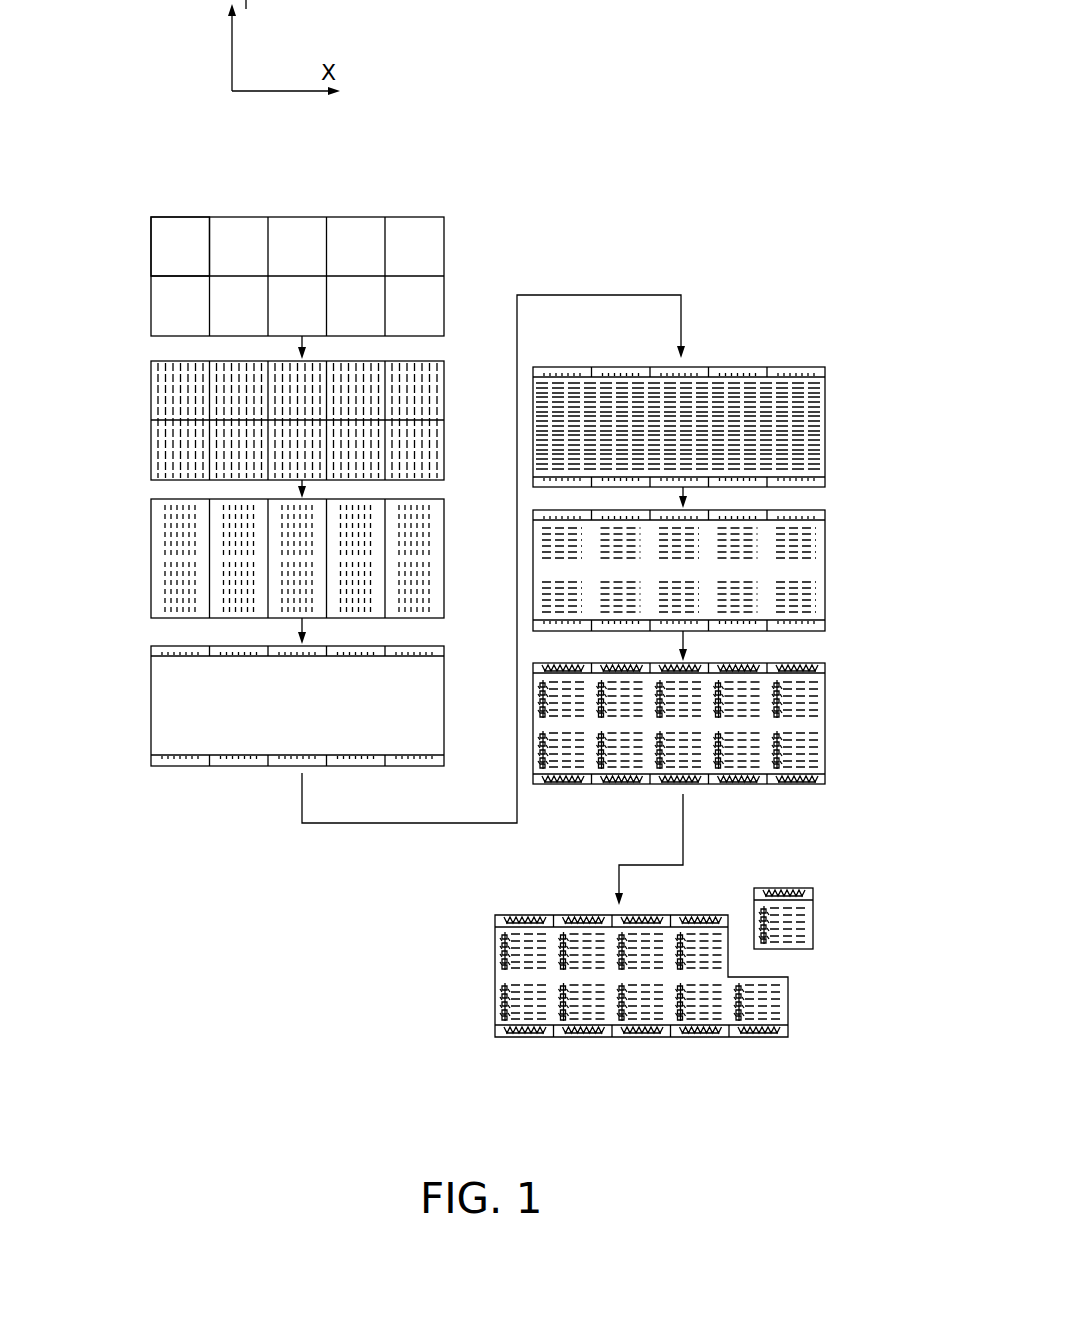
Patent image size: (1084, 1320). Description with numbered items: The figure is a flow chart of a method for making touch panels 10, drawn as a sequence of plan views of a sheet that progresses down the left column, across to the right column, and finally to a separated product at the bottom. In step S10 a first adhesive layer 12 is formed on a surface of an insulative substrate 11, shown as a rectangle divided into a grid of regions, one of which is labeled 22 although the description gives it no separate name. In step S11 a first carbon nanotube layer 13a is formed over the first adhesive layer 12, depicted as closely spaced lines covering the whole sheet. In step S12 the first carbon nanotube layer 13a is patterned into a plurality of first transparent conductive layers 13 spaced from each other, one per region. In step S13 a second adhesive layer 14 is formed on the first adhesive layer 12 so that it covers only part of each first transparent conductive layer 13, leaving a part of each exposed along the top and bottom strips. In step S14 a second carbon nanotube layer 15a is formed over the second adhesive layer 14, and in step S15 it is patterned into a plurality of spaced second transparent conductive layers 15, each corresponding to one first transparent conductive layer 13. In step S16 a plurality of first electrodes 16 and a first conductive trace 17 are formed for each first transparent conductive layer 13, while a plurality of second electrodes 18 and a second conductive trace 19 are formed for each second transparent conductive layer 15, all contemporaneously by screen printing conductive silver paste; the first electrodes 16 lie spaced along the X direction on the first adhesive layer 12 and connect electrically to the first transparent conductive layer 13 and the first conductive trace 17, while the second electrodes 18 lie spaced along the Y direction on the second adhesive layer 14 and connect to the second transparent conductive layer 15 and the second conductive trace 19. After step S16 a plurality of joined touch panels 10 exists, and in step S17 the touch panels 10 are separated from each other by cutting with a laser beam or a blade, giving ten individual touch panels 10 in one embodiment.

The touch panel 10 is at (846, 770).
The insulative substrate 11 is at (447, 240).
The first adhesive layer 12 is at (356, 230).
The first transparent conductive layer 13 is at (428, 540).
The first carbon nanotube layer 13a is at (433, 367).
The second adhesive layer 14 is at (427, 703).
The second transparent conductive layer 15 is at (820, 548).
The second carbon nanotube layer 15a is at (813, 407).
The first electrode 16 is at (820, 677).
The first conductive trace 17 is at (817, 672).
The second electrode 18 is at (777, 717).
The second conductive trace 19 is at (780, 718).
The cell 22 is at (185, 227).
The step of forming a first adhesive layer S10 is at (146, 271).
The step of forming a first carbon nanotube layer S11 is at (146, 412).
The step of patterning the first carbon nanotube layer S12 is at (146, 539).
The step of forming a second adhesive layer S13 is at (146, 699).
The step of forming a second carbon nanotube layer S14 is at (840, 434).
The step of patterning the second carbon nanotube layer S15 is at (840, 569).
The step of forming electrodes and conductive traces S16 is at (818, 655).
The step of separating the touch panels S17 is at (480, 936).